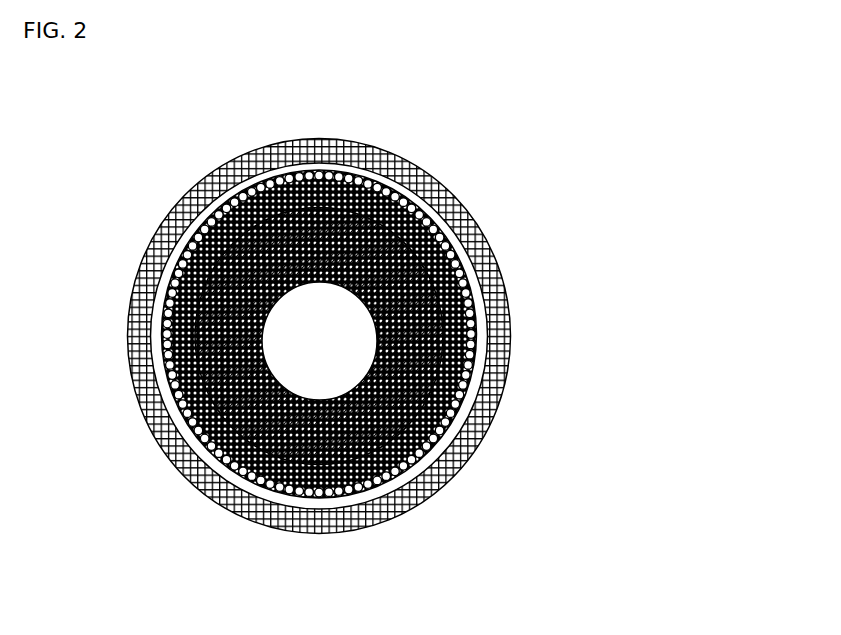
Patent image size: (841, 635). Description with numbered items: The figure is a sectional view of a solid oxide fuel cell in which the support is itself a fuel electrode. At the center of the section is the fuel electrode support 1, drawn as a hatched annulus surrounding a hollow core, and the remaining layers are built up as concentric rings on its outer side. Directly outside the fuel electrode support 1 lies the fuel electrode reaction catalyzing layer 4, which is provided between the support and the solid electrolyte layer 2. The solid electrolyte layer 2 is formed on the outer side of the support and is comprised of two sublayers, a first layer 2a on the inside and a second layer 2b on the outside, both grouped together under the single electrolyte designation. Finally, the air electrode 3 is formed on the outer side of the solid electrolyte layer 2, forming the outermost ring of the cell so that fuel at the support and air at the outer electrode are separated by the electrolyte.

The fuel electrode support 1 is at (327, 447).
The solid electrolyte layer 2 is at (477, 334).
The first layer 2a is at (462, 388).
The second layer 2b is at (478, 349).
The air electrode 3 is at (498, 268).
The fuel electrode reaction catalyzing layer 4 is at (410, 457).